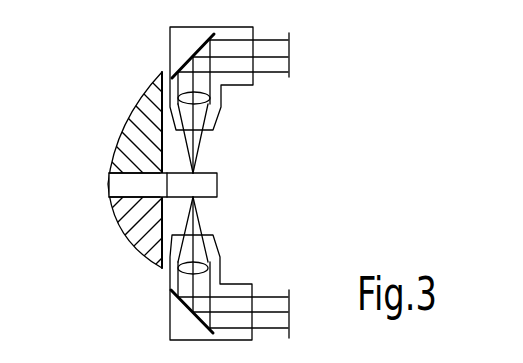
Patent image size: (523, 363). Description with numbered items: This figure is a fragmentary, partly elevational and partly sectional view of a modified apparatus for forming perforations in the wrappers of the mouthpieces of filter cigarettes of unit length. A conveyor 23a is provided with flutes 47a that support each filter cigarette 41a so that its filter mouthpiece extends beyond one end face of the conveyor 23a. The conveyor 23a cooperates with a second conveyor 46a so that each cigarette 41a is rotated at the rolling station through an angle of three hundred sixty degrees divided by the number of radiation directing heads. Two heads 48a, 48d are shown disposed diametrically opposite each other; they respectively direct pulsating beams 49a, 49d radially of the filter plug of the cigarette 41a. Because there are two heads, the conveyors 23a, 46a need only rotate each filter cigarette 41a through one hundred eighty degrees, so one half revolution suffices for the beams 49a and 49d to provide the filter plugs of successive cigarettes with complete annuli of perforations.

The conveyor 23a is at (145, 222).
The filter cigarette 41a is at (200, 186).
The second conveyor 46a is at (152, 103).
The flute 47a is at (110, 192).
The radiation directing head 48a is at (183, 322).
The radiation directing head 48d is at (183, 41).
The beam 49a is at (272, 307).
The beam 49d is at (272, 66).